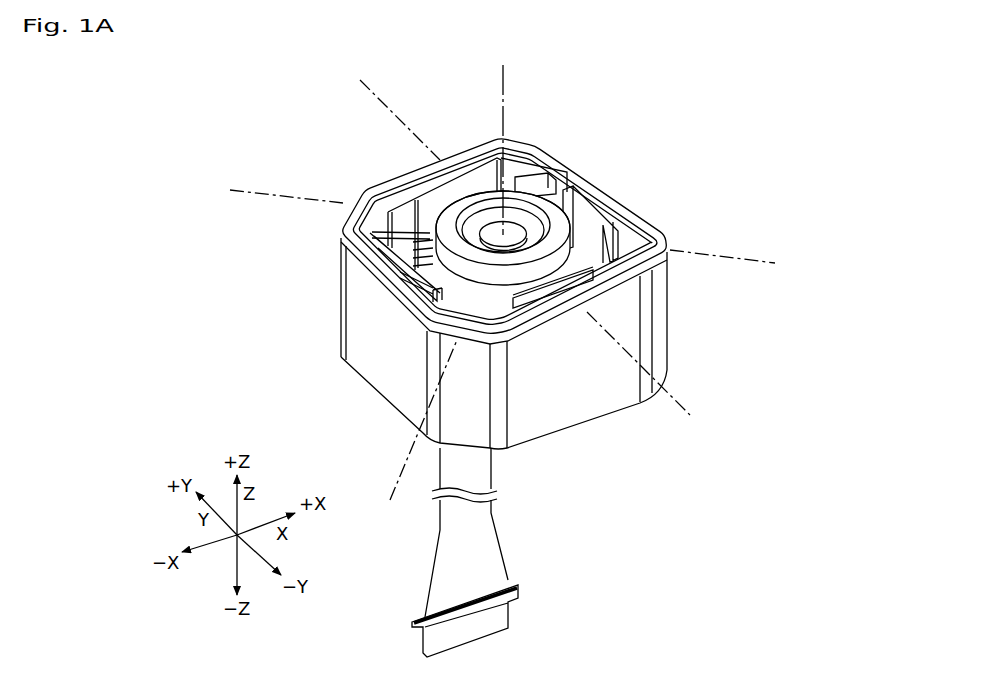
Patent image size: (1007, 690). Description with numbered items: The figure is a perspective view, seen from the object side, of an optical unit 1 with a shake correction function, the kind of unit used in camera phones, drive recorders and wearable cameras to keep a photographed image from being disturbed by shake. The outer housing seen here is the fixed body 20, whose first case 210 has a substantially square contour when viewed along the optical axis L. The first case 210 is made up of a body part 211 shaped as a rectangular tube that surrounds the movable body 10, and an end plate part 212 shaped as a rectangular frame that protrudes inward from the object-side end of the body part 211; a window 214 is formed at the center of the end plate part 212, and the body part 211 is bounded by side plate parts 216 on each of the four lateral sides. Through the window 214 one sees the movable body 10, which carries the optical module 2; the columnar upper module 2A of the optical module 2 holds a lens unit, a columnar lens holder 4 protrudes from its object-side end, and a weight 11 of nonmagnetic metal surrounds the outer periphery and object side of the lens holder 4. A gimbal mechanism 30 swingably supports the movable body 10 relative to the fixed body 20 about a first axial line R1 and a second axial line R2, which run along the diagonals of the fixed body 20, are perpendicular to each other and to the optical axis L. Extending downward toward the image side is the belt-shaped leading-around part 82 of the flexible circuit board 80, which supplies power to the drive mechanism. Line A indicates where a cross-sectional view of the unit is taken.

The optical unit with a shake correction function 1 is at (262, 115).
The fixed body 20 is at (616, 165).
The first case 210 is at (256, 250).
The body part 211 is at (357, 305).
The end plate part 212 is at (363, 242).
The window 214 is at (405, 263).
The side plate parts 216 is at (393, 395).
The gimbal mechanism 30 is at (404, 218).
The optical module 2 is at (589, 245).
The upper module 2A is at (589, 245).
The movable body 10 is at (577, 208).
The weight 11 is at (530, 243).
The lens holder 4 is at (560, 228).
The leading-around part 82 is at (490, 536).
The flexible circuit board 80 is at (511, 552).
The optical axis L is at (505, 97).
The line A- A is at (362, 92).
The first axial line R1 is at (409, 425).
The second axial line R2 is at (487, 221).